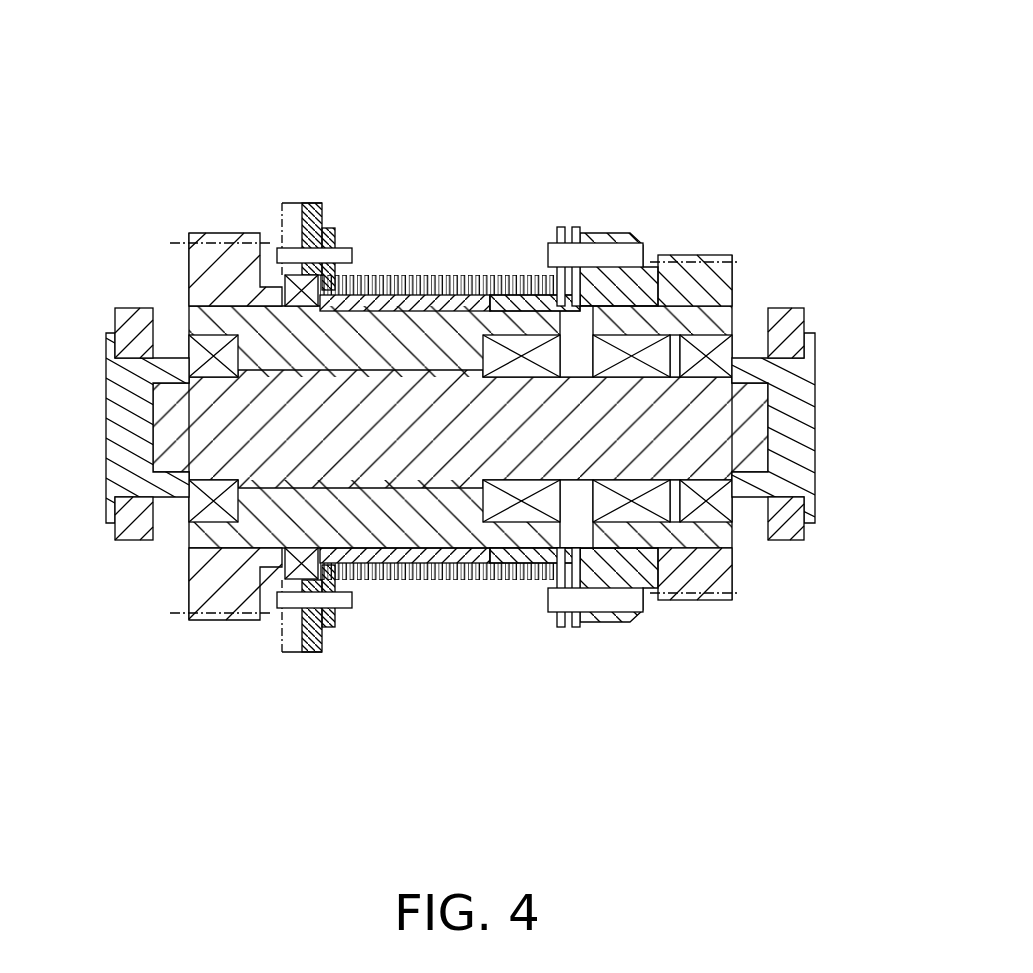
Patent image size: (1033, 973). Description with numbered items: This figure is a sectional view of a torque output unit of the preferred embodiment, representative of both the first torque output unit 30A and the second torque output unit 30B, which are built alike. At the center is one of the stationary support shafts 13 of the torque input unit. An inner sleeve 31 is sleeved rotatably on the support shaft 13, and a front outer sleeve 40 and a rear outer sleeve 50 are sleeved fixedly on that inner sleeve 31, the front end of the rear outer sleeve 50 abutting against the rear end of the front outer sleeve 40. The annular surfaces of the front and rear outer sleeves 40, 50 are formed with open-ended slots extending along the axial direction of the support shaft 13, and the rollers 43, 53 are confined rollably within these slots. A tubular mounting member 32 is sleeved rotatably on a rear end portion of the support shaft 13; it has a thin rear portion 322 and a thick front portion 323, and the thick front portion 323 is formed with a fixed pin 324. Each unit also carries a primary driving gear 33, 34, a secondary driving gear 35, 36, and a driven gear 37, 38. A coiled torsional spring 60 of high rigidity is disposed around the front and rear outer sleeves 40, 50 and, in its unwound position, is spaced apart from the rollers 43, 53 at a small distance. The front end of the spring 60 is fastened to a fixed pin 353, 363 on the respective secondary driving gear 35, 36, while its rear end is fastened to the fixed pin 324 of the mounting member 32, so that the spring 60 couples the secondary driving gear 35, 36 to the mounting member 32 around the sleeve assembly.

The stationary support shaft 13 is at (460, 427).
The first torque output unit 30A is at (446, 423).
The second torque output unit 30B is at (446, 423).
The inner sleeve 31 is at (387, 303).
The tubular mounting member 32 is at (642, 547).
The thin rear portion 322 is at (710, 543).
The thick front portion 323 is at (596, 493).
The fixed pin 324 is at (593, 603).
The primary driving gear 33 is at (163, 426).
The primary driving gear 34 is at (203, 585).
The secondary driving gear 35 is at (280, 648).
The secondary driving gear 36 is at (330, 648).
The fixed pin 363 is at (357, 517).
The fixed pin 353 is at (335, 600).
The driven gear 37 is at (743, 261).
The driven gear 38 is at (710, 284).
The front outer sleeve 40 is at (383, 545).
The roller 43 is at (470, 275).
The rear outer sleeve 50 is at (563, 623).
The roller 53 is at (503, 293).
The coiled torsional spring 60 is at (516, 592).